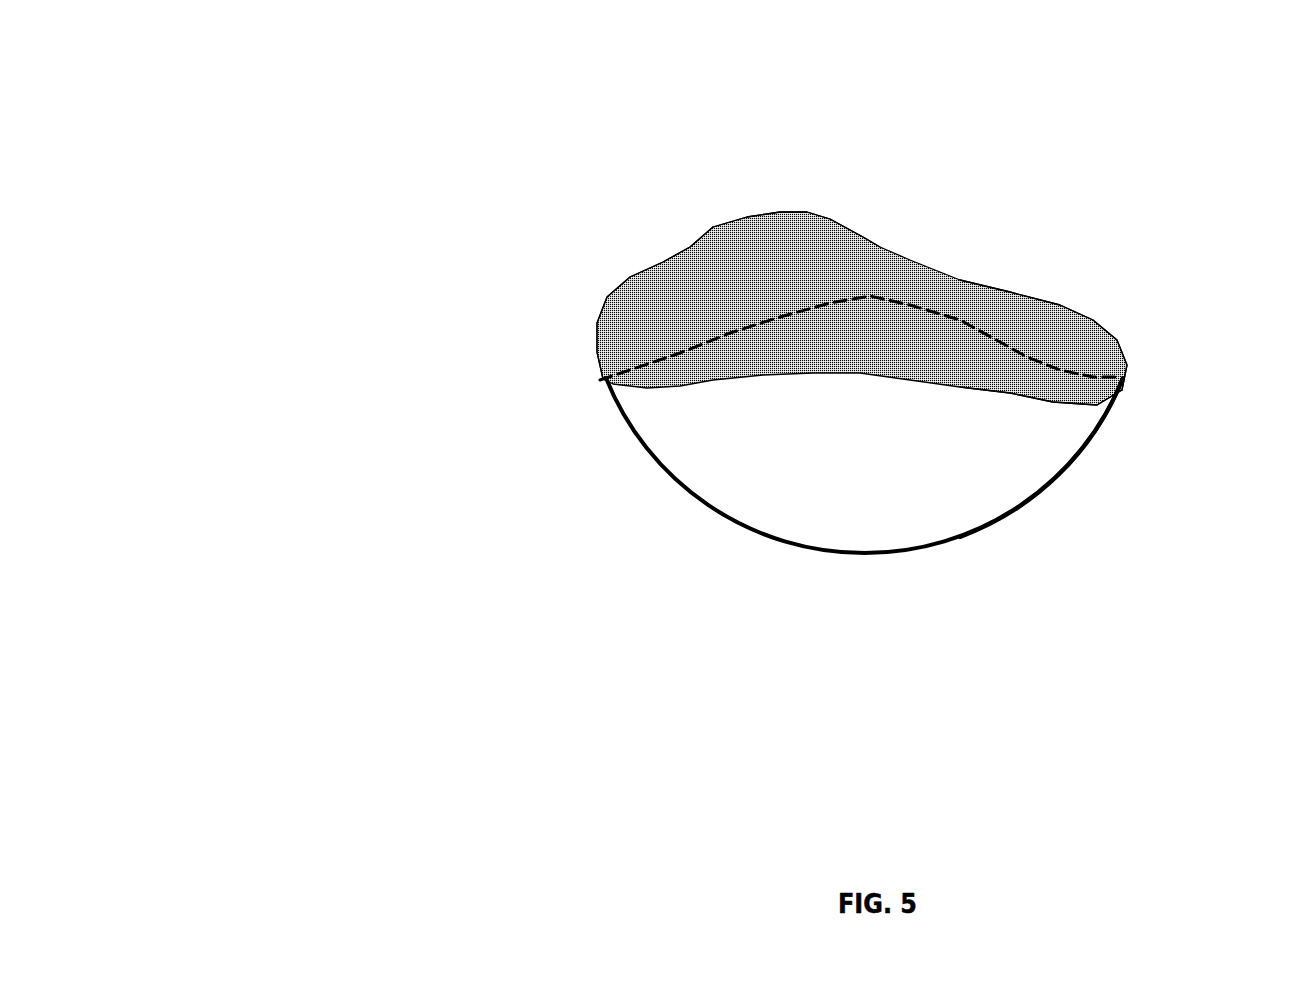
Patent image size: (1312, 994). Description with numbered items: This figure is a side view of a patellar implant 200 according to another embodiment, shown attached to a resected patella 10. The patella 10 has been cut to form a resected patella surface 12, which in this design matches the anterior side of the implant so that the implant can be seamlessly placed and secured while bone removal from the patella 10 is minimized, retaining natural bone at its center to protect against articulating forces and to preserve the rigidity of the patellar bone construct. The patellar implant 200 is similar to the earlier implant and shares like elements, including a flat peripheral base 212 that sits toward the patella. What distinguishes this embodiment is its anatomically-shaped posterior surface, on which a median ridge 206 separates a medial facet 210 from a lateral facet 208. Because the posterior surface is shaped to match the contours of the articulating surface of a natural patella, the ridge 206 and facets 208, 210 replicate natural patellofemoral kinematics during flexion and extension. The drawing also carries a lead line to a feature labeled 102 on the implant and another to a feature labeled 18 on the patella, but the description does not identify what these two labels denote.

The patellar implant 200 is at (450, 106).
The pad 102 is at (929, 235).
The median ridge 206 is at (803, 213).
The lateral facet 208 is at (693, 277).
The medial facet 210 is at (1035, 307).
The flat peripheral base 212 is at (1033, 397).
The resected patella surface 12 is at (690, 357).
The resected patella 10 is at (598, 524).
The wall 18 is at (990, 527).